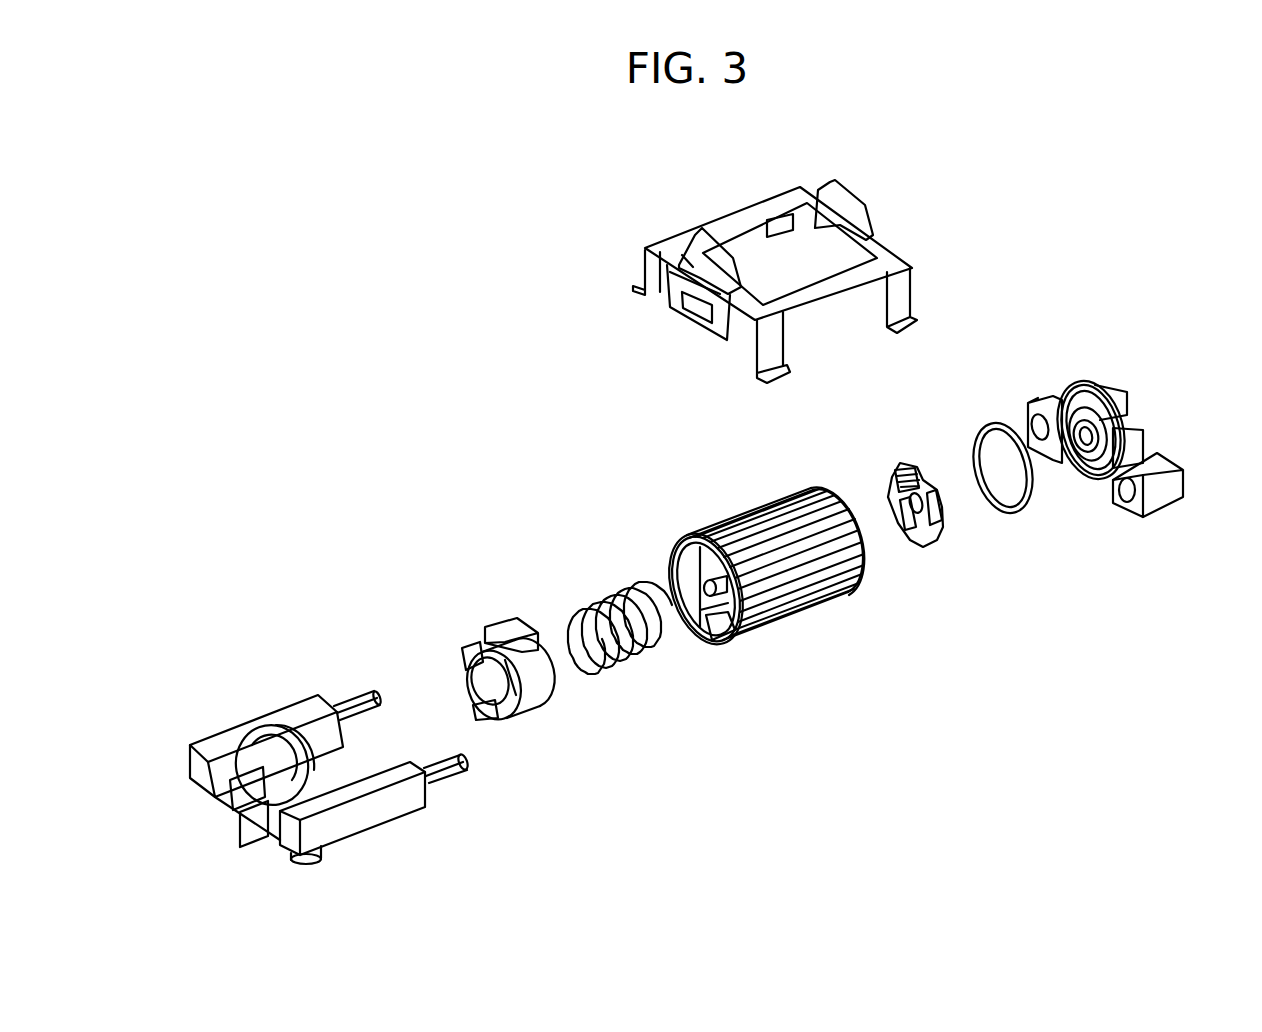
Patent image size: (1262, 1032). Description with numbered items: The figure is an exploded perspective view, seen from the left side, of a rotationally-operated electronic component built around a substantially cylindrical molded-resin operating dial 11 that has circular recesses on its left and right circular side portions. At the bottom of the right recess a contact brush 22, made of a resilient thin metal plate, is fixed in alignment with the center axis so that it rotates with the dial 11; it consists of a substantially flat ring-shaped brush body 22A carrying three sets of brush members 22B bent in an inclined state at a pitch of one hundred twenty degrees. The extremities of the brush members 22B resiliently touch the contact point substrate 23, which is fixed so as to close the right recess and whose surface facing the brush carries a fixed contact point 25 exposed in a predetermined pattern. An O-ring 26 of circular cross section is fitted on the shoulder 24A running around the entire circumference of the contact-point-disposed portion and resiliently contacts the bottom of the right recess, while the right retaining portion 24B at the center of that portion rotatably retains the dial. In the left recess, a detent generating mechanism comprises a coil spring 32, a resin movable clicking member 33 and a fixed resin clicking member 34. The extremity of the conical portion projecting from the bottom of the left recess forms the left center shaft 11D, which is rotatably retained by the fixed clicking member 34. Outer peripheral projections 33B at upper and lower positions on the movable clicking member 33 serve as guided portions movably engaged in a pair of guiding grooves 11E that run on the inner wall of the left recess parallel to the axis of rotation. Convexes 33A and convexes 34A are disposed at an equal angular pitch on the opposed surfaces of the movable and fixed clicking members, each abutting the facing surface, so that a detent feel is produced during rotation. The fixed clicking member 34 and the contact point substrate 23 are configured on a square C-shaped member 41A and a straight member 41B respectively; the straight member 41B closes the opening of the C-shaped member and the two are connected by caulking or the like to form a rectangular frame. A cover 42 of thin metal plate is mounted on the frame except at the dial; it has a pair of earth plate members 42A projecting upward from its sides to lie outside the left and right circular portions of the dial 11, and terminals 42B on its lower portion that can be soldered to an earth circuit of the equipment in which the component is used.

The operating dial 11 is at (790, 587).
The left center shaft 11D is at (737, 593).
The guiding grooves 11E is at (707, 628).
The contact brush 22 is at (1000, 622).
The brush body 22A is at (937, 540).
The brush members 22B is at (912, 543).
The contact point substrate 23 is at (1093, 413).
The shoulder 24A is at (1081, 390).
The right retaining portion 24B is at (1058, 410).
The fixed contact point 25 is at (1097, 460).
The O-ring 26 is at (1017, 513).
The coil spring 32 is at (613, 657).
The movable clicking member 33 is at (612, 820).
The convexes 33A is at (488, 715).
The outer peripheral projections 33B is at (537, 690).
The fixed clicking member 34 is at (268, 755).
The convexes 34A is at (310, 780).
The square C-shaped member 41A is at (300, 707).
The straight member 41B is at (1165, 490).
The cover 42 is at (887, 262).
The earth plate members 42A is at (830, 200).
The terminals 42B is at (760, 378).